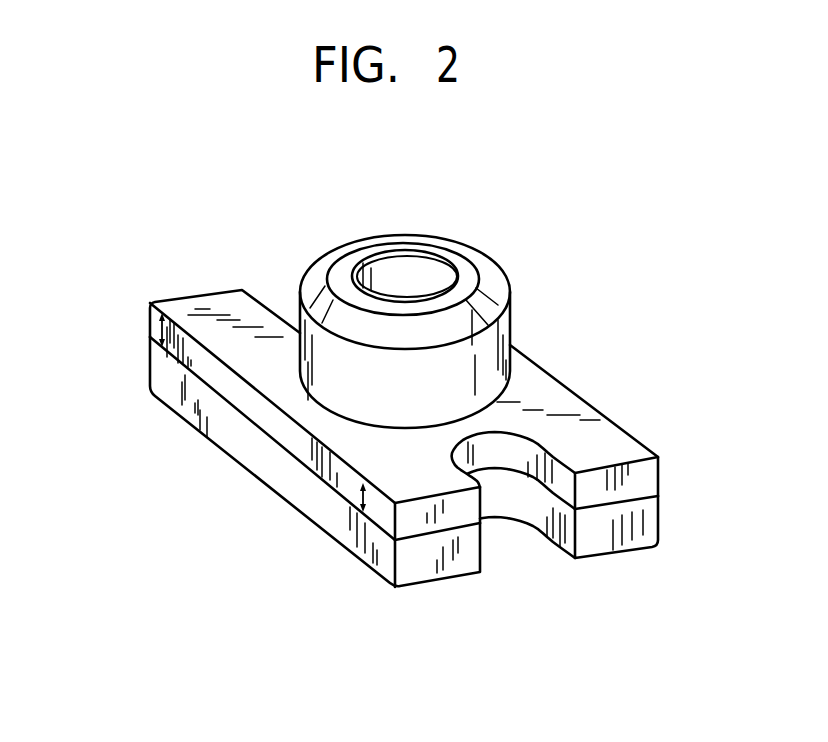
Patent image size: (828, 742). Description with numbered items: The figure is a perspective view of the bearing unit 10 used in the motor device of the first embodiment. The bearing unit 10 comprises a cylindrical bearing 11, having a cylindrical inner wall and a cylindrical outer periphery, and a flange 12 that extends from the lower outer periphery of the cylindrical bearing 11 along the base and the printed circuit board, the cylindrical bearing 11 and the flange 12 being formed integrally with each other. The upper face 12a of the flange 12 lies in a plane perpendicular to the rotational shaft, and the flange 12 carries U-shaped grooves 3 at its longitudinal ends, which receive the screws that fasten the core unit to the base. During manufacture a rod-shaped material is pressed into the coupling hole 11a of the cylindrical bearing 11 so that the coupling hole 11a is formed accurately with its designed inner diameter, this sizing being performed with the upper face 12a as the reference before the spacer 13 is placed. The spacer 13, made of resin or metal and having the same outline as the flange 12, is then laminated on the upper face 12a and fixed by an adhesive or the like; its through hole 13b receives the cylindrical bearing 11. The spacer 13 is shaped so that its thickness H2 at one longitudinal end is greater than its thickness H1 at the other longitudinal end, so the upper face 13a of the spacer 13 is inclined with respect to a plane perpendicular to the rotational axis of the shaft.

The U-shaped groove 3 is at (275, 293).
The bearing unit 10 is at (528, 227).
The cylindrical bearing 11 is at (487, 364).
The coupling hole 11a is at (393, 266).
The flange 12 is at (252, 458).
The upper face of the flange 12a is at (418, 542).
The spacer 13 is at (243, 400).
The upper face of the spacer 13a is at (597, 443).
The through hole 13b is at (323, 411).
The thickness H1 is at (150, 337).
The thickness H2 is at (360, 497).